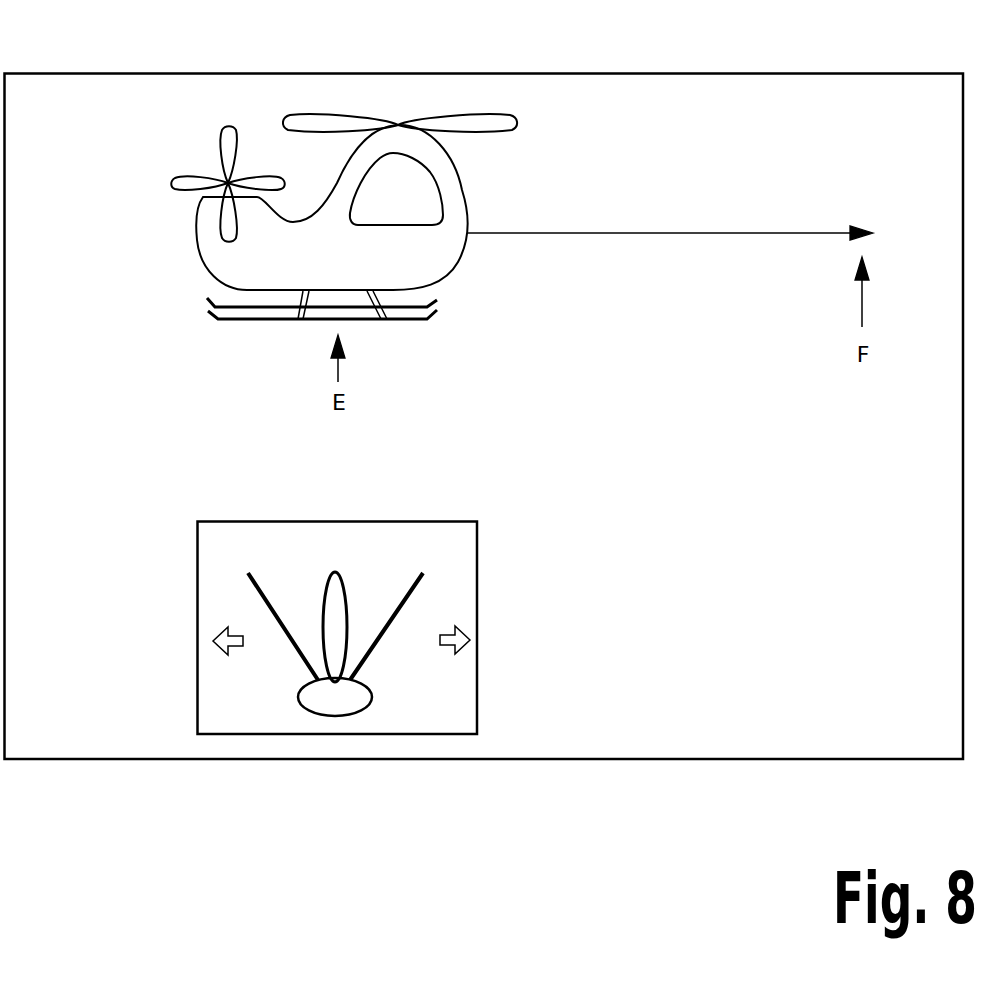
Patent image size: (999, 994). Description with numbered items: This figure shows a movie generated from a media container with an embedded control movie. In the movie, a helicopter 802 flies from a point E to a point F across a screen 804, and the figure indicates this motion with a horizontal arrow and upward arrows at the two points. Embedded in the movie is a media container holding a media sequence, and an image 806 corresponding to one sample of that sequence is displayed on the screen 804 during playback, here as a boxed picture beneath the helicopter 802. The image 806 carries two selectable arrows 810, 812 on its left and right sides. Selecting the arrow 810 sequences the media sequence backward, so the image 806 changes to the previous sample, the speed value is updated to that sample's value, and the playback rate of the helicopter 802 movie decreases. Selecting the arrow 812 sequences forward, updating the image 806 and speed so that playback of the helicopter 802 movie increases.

The helicopter 802 is at (197, 255).
The screen 804 is at (760, 88).
The image 806 is at (373, 521).
The arrow 810 is at (223, 647).
The arrow 812 is at (468, 632).